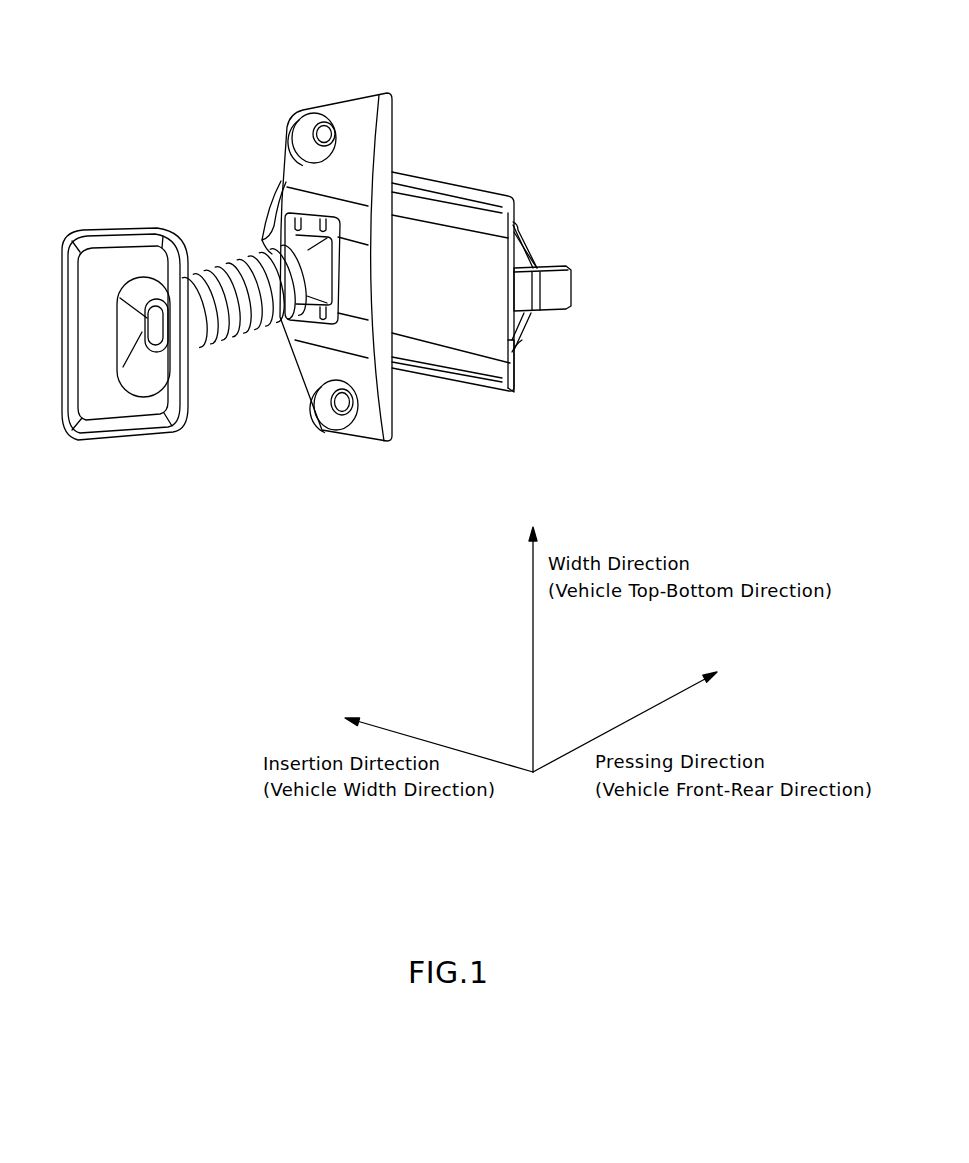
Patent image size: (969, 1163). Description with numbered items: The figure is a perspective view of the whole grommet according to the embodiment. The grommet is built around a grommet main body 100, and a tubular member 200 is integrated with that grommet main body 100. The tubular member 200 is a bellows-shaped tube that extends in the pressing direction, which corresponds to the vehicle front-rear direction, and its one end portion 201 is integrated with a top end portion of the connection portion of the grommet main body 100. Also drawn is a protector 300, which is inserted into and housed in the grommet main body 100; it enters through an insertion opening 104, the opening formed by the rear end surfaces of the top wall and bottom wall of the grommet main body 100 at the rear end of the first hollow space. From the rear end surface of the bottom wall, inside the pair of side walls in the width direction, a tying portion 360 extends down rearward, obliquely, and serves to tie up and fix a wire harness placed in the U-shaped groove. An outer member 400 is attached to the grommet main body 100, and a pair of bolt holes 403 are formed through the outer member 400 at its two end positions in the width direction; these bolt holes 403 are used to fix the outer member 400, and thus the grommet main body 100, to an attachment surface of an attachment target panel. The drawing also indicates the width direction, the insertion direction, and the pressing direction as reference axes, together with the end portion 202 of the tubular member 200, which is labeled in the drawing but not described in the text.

The grommet main body 100 is at (464, 180).
The insertion opening 104 is at (518, 352).
The tubular member 200 is at (207, 240).
The one end portion 201 is at (277, 210).
The pressing cap 202 is at (69, 246).
The protector 300 is at (601, 308).
The tying portion 360 is at (562, 310).
The outer member 400 is at (399, 88).
The bolt holes 403 is at (303, 116).